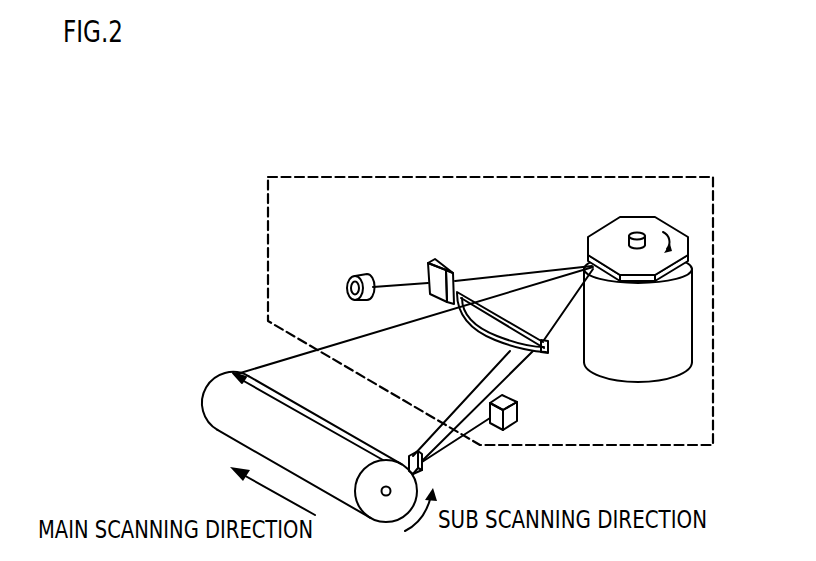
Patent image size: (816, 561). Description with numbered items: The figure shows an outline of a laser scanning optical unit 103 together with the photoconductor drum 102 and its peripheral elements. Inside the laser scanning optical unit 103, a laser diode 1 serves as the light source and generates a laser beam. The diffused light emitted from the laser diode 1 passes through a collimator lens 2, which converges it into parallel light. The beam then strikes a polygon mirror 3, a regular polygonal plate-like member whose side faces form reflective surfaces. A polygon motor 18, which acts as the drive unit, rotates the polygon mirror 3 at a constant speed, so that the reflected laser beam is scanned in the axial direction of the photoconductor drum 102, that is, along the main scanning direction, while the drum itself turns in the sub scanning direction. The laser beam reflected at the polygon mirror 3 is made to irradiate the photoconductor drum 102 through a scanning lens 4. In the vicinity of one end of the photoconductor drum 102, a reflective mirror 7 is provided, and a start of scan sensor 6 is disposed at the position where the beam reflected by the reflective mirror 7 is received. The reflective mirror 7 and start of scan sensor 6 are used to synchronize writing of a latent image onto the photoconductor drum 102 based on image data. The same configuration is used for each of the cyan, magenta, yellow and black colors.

The laser diode 1 is at (362, 272).
The collimator lens 2 is at (447, 262).
The polygon mirror 3 is at (610, 232).
The scanning lens 4 is at (537, 355).
The start of scan sensor 6 is at (519, 419).
The reflective mirror 7 is at (425, 465).
The polygon motor 18 is at (669, 360).
The photoconductor drum 102 is at (248, 428).
The laser scanning optical unit 103 is at (661, 176).